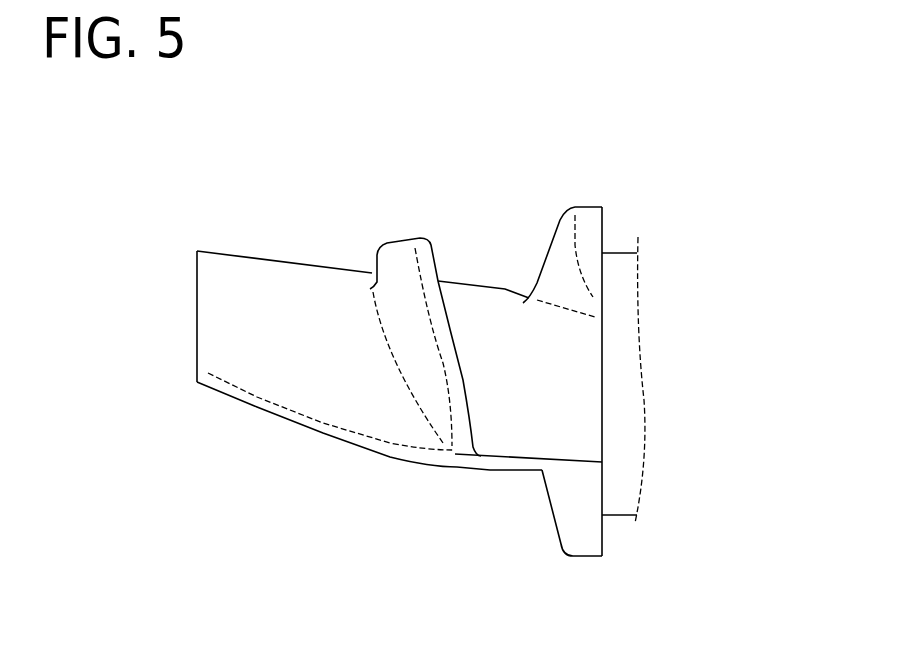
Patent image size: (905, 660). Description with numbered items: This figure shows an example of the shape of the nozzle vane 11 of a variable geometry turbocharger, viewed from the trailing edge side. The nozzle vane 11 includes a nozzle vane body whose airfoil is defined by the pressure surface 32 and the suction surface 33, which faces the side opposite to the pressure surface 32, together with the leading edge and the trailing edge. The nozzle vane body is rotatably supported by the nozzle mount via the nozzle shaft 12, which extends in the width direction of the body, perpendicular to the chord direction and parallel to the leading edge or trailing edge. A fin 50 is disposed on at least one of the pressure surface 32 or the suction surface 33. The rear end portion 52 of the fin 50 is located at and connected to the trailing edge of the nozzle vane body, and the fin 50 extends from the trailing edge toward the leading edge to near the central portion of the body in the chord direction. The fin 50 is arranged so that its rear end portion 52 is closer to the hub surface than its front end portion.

The nozzle vane 11 is at (721, 239).
The nozzle shaft 12 is at (615, 500).
The pressure surface 32 is at (248, 410).
The suction surface 33 is at (247, 252).
The fin 50 is at (425, 237).
The rear end portion 52 is at (465, 470).